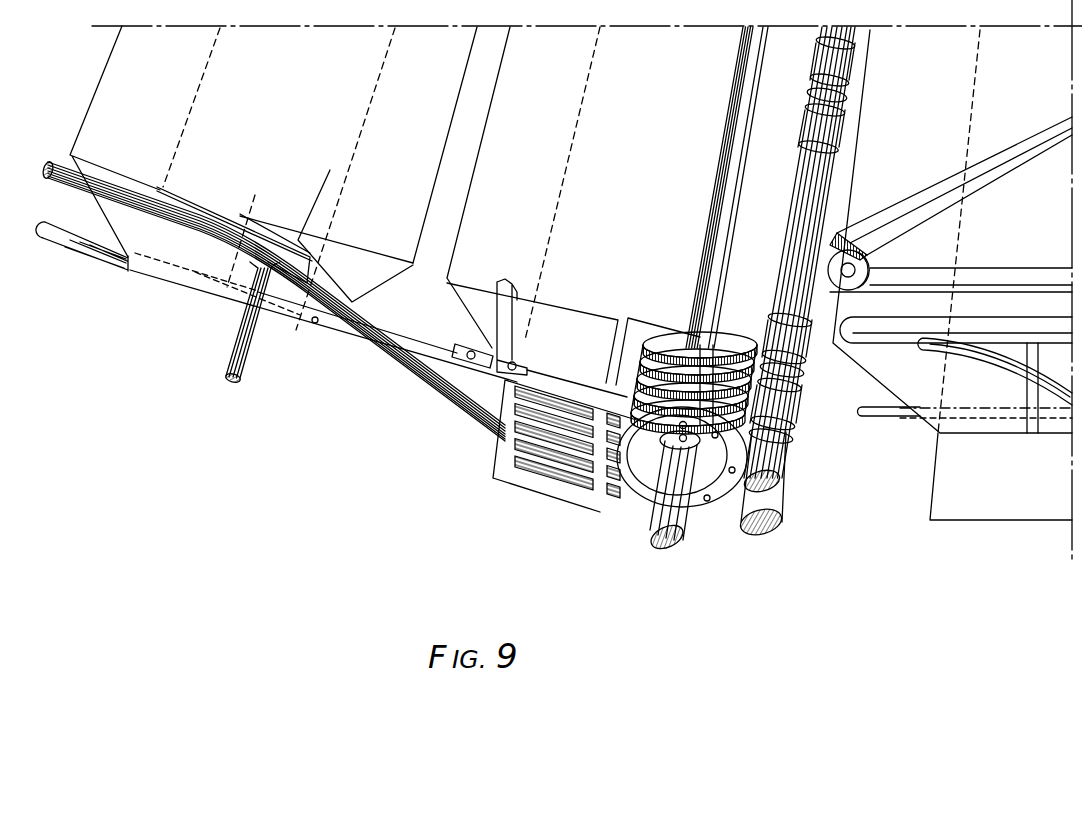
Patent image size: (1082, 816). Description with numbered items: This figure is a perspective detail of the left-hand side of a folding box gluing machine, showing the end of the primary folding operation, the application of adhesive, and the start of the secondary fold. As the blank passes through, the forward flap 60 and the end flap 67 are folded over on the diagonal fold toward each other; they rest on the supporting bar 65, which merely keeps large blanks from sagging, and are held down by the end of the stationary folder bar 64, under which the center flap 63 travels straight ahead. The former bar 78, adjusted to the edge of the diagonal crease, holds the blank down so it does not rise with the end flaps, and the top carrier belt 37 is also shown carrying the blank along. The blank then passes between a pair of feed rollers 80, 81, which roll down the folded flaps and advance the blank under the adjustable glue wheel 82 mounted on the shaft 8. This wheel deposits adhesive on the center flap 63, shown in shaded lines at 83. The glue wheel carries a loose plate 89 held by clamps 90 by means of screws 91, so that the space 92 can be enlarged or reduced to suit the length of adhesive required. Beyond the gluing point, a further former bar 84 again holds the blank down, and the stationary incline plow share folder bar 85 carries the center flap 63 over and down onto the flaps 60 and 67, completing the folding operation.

The shaft 8 is at (743, 115).
The top carrier belt 37 is at (1013, 150).
The forward flap 60 is at (123, 180).
The center flap 63 is at (218, 220).
The stationary folder bar 64 is at (987, 362).
The supporting bar 65 is at (887, 420).
The end flap 67 is at (300, 238).
The former bar 78 is at (980, 315).
The feed roller 80 is at (777, 463).
The feed roller 81 is at (780, 514).
The adjustable glue wheel 82 is at (627, 478).
The adhesive 83 is at (495, 475).
The former bar 84 is at (420, 342).
The stationary incline plow share folder bar 85 is at (388, 358).
The loose plate 89 is at (735, 370).
The clamp 90 is at (723, 490).
The screw 91 is at (705, 503).
The space 92 is at (713, 360).